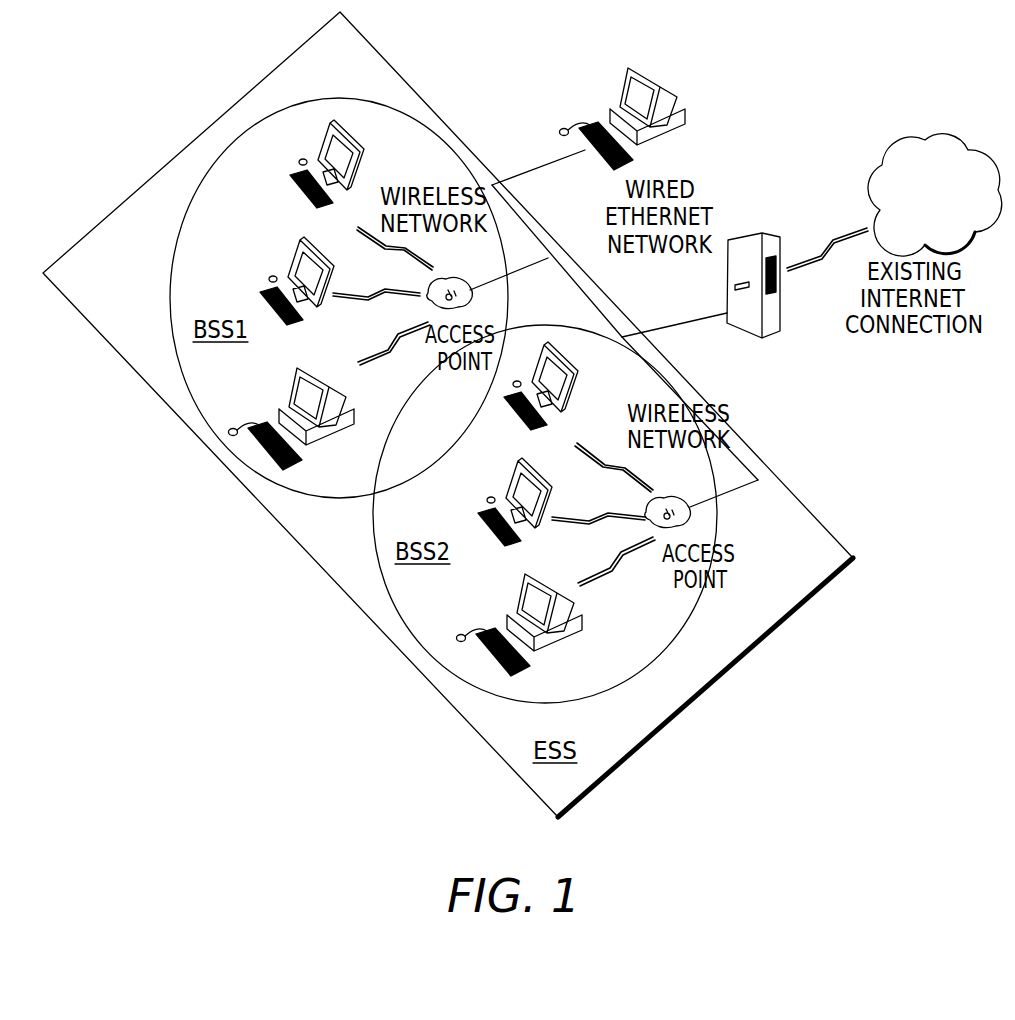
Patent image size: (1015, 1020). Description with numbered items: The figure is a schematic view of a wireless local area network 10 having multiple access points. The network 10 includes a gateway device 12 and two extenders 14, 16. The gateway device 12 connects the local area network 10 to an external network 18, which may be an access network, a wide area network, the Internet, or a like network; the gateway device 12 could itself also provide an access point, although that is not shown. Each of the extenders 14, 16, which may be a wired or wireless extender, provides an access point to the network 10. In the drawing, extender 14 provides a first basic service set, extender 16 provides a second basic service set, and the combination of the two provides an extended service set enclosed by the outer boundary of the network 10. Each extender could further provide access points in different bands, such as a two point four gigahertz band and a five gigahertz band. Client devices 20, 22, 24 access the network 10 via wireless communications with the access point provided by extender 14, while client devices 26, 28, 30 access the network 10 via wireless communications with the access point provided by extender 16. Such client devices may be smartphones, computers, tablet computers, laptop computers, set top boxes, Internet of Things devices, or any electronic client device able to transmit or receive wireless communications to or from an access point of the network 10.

The wireless local area network 10 is at (783, 480).
The gateway device 12 is at (765, 238).
The extender 14 is at (447, 278).
The extender 16 is at (667, 497).
The external network 18 is at (950, 143).
The client device 20 is at (362, 155).
The client device 22 is at (292, 258).
The client device 24 is at (297, 386).
The client device 26 is at (578, 381).
The client device 28 is at (512, 481).
The client device 30 is at (520, 591).